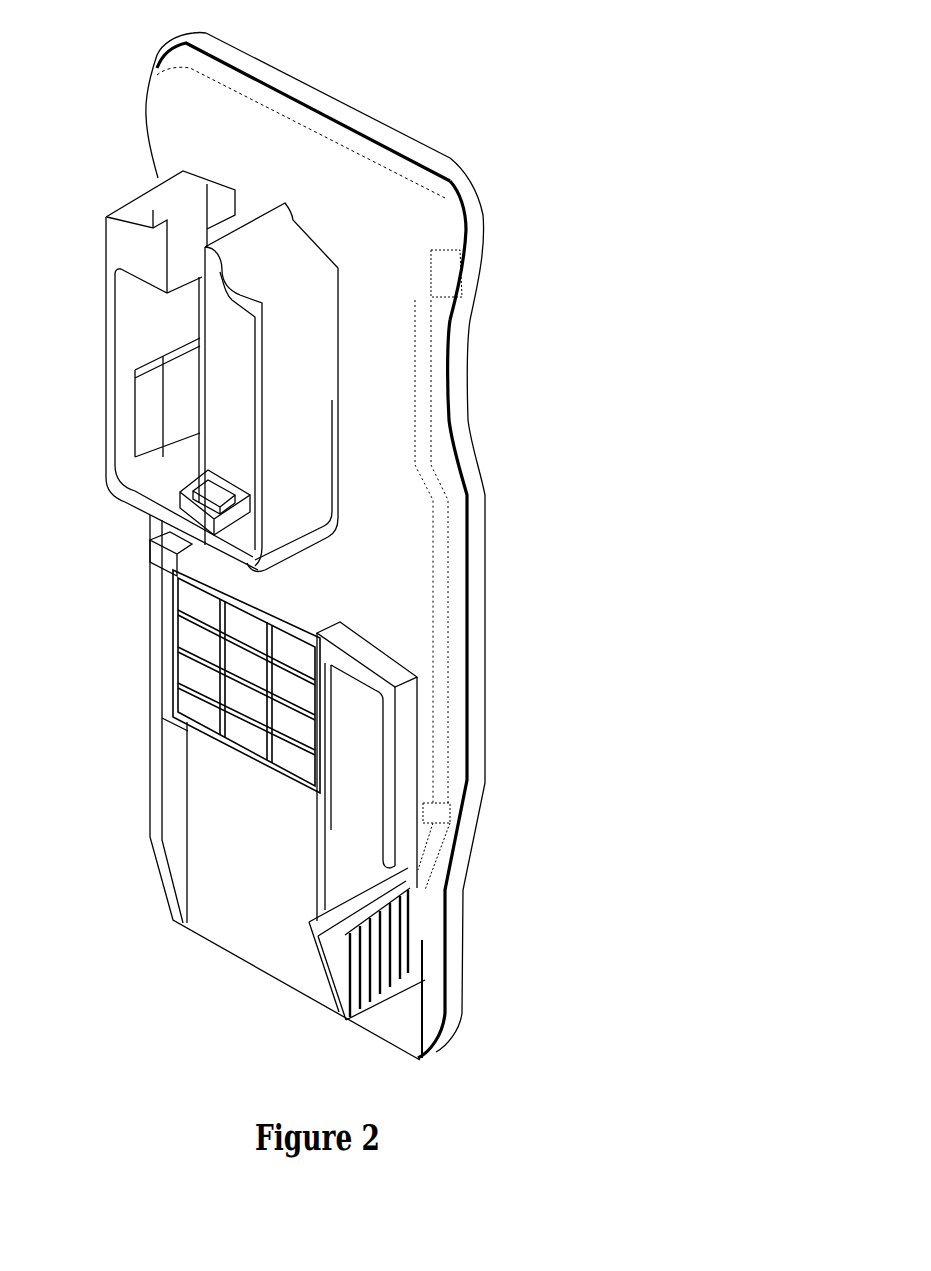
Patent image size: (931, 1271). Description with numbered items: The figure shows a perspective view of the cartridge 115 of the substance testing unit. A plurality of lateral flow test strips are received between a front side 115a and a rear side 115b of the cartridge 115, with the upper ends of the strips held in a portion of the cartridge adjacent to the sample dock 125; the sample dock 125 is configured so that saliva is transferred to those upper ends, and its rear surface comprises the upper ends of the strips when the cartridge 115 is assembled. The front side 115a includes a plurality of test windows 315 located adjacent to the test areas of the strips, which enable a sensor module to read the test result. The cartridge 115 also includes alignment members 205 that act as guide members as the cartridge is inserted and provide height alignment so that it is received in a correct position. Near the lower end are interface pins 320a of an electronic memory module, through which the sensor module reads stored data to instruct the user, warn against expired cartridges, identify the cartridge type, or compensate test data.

The cartridge 115 is at (545, 147).
The front side 115a is at (164, 102).
The rear side 115b is at (486, 219).
The sample dock 125 is at (119, 243).
The alignment members 205 is at (149, 757).
The test windows 315 is at (178, 651).
The interface pins 320a is at (415, 1052).